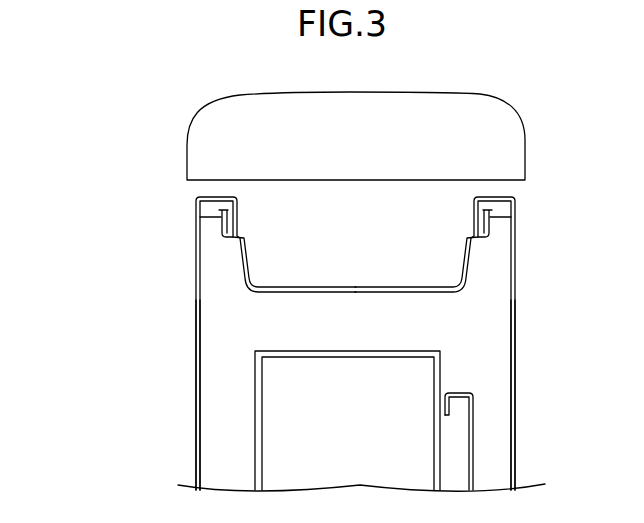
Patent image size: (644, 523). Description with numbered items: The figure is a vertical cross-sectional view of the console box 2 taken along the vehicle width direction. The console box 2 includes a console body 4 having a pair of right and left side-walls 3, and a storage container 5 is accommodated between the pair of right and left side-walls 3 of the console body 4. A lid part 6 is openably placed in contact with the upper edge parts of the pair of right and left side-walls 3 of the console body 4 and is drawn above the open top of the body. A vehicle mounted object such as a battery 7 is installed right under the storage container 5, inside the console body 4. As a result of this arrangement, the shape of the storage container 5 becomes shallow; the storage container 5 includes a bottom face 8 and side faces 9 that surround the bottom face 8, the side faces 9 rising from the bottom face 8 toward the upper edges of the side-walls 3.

The console box 2 is at (78, 115).
The side-walls 3 is at (196, 407).
The console body 4 is at (196, 263).
The storage container 5 is at (316, 284).
The lid part 6 is at (187, 137).
The battery 7 is at (440, 372).
The bottom face 8 is at (413, 283).
The side faces 9 is at (462, 264).